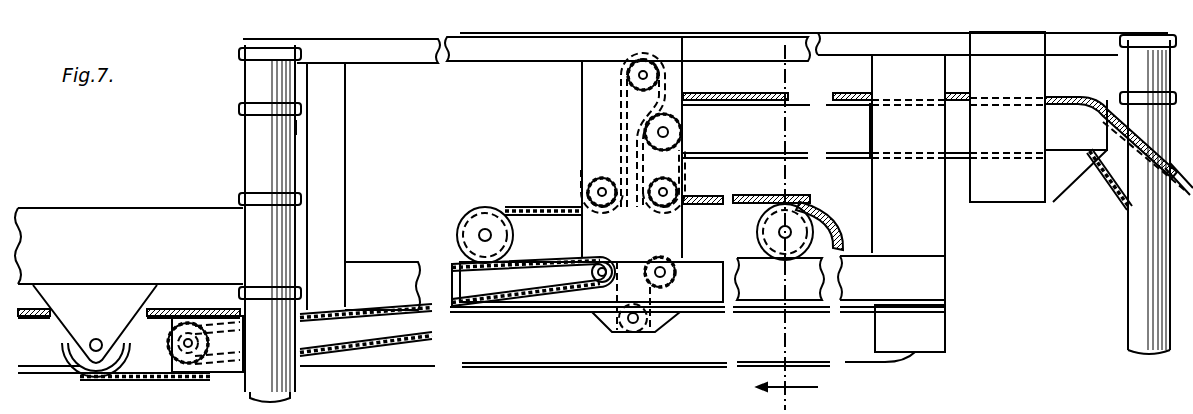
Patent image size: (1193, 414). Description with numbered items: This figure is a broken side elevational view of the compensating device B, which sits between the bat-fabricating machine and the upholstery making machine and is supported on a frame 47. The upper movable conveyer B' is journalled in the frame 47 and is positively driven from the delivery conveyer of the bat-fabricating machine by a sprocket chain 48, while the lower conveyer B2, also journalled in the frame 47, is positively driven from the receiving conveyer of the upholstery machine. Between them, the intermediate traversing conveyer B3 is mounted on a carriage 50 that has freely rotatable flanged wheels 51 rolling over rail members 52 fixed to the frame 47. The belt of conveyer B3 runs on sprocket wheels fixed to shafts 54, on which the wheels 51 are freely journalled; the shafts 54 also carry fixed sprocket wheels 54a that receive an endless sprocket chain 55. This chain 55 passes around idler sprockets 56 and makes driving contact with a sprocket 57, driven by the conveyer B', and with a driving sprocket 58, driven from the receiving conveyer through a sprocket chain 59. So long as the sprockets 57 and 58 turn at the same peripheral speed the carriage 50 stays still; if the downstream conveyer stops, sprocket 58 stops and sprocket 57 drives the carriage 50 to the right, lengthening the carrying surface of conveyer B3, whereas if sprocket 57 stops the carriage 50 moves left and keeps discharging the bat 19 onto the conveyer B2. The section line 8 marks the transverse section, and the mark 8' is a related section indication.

The frame 47 is at (302, 134).
The sprocket chain 48 is at (1060, 100).
The bat 19 is at (858, 92).
The carriage 50 is at (545, 228).
The flanged wheels 51 is at (456, 232).
The rail members 52 is at (935, 280).
The shafts 54 is at (485, 230).
The fixed sprocket wheels 54a is at (480, 230).
The endless sprocket chain 55 is at (562, 213).
The idler sprockets 56 is at (652, 74).
The sprocket 57 is at (685, 133).
The driving sprocket 58 is at (592, 283).
The sprocket chain 59 is at (460, 308).
The compensating device B is at (246, 134).
The upper movable conveyer B' is at (835, 130).
The lower conveyer B2 is at (702, 365).
The intermediate traversing conveyer B3 is at (512, 207).
The section line 8 is at (787, 228).
The section line 8' is at (49, 392).